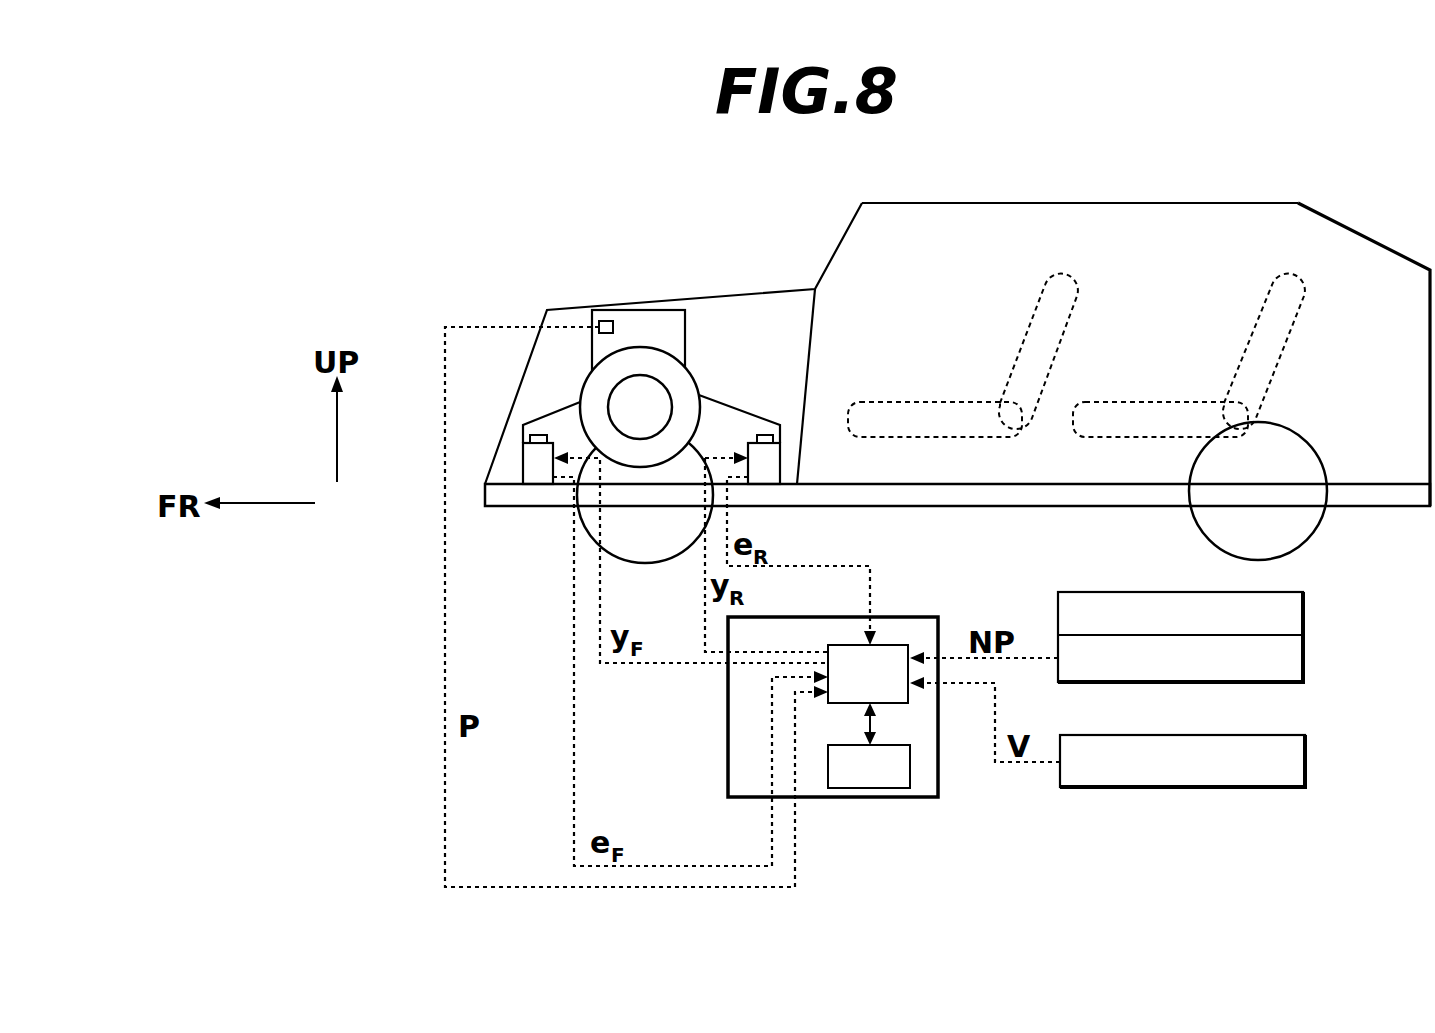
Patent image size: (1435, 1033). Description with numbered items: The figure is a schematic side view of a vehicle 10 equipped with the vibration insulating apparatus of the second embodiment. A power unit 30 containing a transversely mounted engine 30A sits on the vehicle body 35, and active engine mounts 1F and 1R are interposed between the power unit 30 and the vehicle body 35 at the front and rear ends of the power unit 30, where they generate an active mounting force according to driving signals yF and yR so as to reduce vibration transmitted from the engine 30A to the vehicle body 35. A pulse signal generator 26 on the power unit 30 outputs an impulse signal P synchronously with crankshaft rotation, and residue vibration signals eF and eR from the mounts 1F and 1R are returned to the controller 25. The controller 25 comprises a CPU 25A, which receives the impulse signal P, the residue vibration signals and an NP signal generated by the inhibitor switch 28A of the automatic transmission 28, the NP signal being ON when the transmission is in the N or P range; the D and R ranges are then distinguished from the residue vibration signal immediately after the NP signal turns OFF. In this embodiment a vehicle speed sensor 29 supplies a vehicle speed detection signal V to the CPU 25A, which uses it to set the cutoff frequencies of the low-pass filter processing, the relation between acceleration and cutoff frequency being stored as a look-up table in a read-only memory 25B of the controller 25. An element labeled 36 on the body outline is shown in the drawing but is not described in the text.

The vehicle 10 is at (986, 184).
The vehicle body 36 is at (1206, 203).
The power unit 30 is at (631, 296).
The pulse signal generator 26 is at (603, 320).
The engine 30A is at (685, 337).
The active engine mount 1F is at (522, 458).
The active engine mount 1R is at (783, 440).
The vehicle body 35 is at (974, 507).
The controller 25 is at (843, 616).
The CPU 25A is at (885, 643).
The ROM 25B is at (910, 760).
The automatic transmission 28 is at (1162, 592).
The inhibitor switch 28A is at (1303, 650).
The vehicle speed sensor 29 is at (1305, 768).